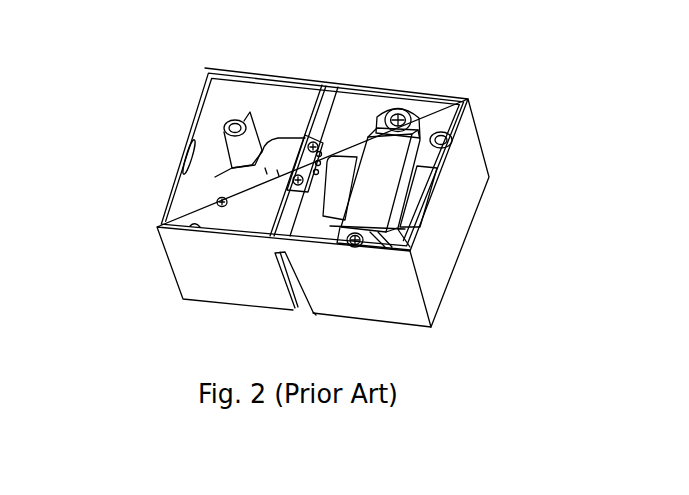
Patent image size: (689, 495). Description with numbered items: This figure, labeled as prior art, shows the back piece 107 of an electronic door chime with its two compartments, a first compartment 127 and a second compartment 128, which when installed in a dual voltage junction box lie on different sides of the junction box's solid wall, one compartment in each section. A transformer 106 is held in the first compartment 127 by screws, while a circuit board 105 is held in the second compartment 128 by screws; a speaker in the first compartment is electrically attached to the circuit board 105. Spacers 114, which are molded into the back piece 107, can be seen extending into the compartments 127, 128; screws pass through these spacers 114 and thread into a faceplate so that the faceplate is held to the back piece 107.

The circuit board 105 is at (230, 217).
The transformer 106 is at (393, 160).
The back piece 107 is at (460, 172).
The spacers 114 is at (222, 136).
The first compartment 127 is at (440, 117).
The second compartment 128 is at (157, 226).